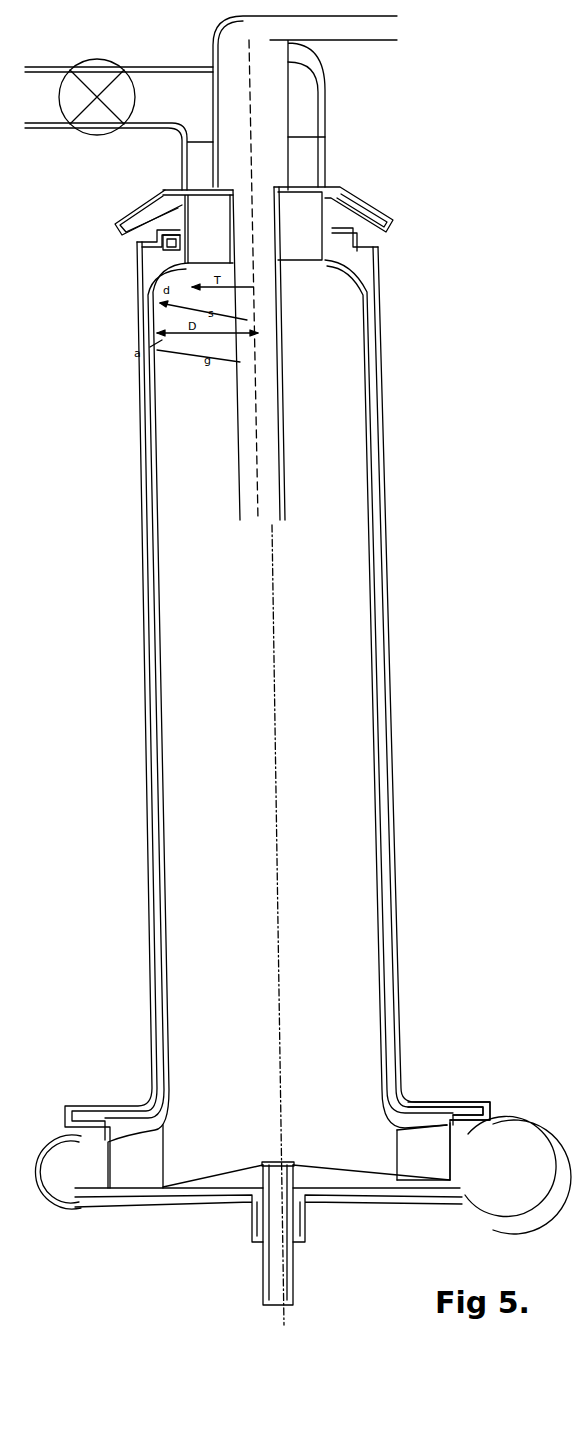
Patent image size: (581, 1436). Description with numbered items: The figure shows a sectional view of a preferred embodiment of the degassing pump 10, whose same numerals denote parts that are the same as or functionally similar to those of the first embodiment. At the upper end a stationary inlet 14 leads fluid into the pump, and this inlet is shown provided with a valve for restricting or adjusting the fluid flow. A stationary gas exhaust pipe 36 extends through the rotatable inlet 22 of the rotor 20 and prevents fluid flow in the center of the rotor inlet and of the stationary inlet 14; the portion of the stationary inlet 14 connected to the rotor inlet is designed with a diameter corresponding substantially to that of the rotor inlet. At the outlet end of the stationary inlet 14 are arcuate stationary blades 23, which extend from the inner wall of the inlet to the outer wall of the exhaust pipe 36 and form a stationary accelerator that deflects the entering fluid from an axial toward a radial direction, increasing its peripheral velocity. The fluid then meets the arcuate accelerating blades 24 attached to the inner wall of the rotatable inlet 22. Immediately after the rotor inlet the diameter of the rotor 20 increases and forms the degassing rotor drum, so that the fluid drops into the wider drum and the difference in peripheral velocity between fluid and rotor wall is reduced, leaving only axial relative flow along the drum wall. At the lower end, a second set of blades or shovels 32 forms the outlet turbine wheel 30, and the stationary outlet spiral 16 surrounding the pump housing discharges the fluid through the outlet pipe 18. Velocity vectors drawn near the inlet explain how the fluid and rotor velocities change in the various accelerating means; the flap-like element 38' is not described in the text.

The degassing pump 10 is at (245, 232).
The stationary inlet 14 is at (157, 303).
The stationary outlet spiral 16 is at (557, 1143).
The outlet pipe 18 is at (460, 1163).
The rotor 20 is at (373, 320).
The rotatable inlet 22 is at (155, 335).
The stationary blades 23 is at (303, 153).
The accelerating blades 24 is at (343, 197).
The outlet turbine wheel 30 is at (418, 1122).
The blades or shovels 32 is at (428, 1158).
The stationary gas exhaust pipe 36 is at (297, 43).
The left flange flap 38' is at (131, 233).